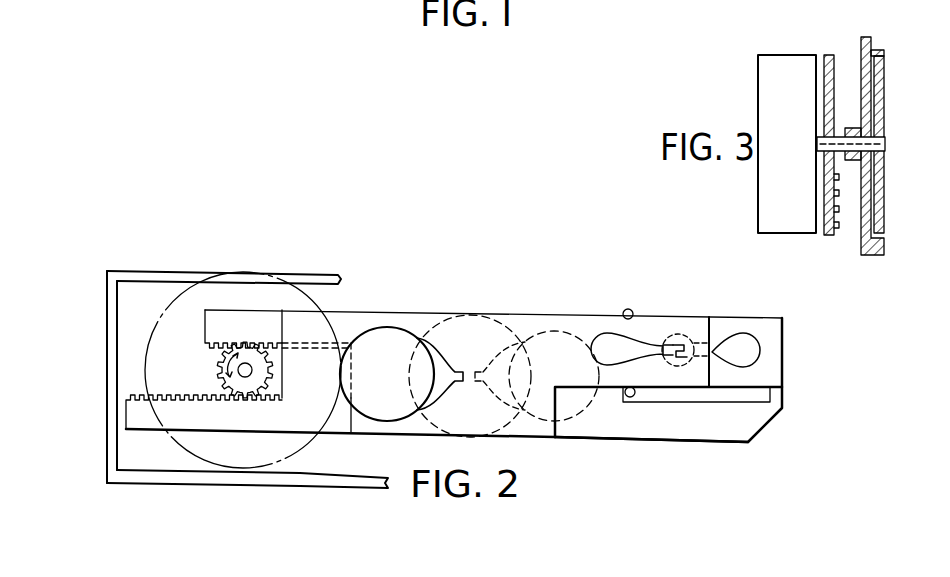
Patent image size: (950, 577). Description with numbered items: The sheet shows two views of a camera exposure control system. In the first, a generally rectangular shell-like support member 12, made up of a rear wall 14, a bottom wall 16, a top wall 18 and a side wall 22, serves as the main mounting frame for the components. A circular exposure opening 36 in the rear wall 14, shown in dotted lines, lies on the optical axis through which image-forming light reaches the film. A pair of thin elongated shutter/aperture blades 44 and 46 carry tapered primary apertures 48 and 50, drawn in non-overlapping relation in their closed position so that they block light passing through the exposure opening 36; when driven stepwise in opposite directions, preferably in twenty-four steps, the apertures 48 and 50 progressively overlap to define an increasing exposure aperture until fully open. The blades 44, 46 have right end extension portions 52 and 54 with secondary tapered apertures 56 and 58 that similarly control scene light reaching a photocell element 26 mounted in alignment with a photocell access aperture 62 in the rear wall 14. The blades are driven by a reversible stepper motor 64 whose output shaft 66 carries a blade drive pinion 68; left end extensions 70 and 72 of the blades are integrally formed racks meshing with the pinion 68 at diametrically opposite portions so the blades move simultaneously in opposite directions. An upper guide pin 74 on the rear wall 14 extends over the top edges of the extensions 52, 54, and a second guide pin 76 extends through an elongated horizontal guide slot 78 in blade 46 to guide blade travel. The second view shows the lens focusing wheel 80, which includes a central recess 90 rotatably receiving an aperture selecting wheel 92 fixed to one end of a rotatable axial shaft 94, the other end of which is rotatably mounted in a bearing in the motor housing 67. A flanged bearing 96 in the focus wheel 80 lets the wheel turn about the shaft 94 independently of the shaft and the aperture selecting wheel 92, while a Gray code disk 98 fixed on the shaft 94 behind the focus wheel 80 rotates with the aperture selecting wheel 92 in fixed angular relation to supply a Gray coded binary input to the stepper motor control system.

In FIG. 2, the support member 12 is at (86, 274).
In FIG. 2, the rear wall 14 is at (140, 305).
In FIG. 2, the bottom wall 16 is at (367, 486).
In FIG. 2, the top wall 18 is at (175, 272).
In FIG. 2, the side wall 22 is at (108, 350).
In FIG. 2, the stepper motor 64 is at (278, 273).
In FIG. 2, the left end elongated extension 72 is at (223, 325).
In FIG. 2, the left end elongated extension 70 is at (199, 420).
In FIG. 2, the blade drive pinion 68 is at (247, 386).
In FIG. 2, the output shaft 66 is at (248, 370).
In FIG. 2, the shutter/aperture blade 44 is at (366, 318).
In FIG. 2, the primary aperture 48 is at (388, 346).
In FIG. 2, the exposure opening 36 is at (505, 325).
In FIG. 2, the right end extension portion 52 is at (590, 328).
In FIG. 2, the secondary tapered aperture 56 is at (613, 345).
In FIG. 2, the upper guide pin 74 is at (633, 310).
In FIG. 2, the photocell element 26 is at (685, 334).
In FIG. 2, the photocell access aperture 62 is at (680, 362).
In FIG. 2, the secondary tapered aperture 58 is at (741, 352).
In FIG. 2, the right end extension portion 54 is at (768, 332).
In FIG. 2, the primary aperture 50 is at (577, 404).
In FIG. 2, the guide slot 78 is at (670, 394).
In FIG. 2, the second guide pin 76 is at (634, 396).
In FIG. 2, the shutter/aperture blade 46 is at (578, 425).
In FIG. 3, the motor housing 67 is at (767, 49).
In FIG. 3, the Gray code disk 98 is at (828, 55).
In FIG. 3, the flanged bearing 96 is at (841, 161).
In FIG. 3, the lens focusing wheel 80 is at (868, 37).
In FIG. 3, the central recess 90 is at (885, 53).
In FIG. 3, the aperture selecting wheel 92 is at (885, 92).
In FIG. 3, the axial shaft 94 is at (885, 147).